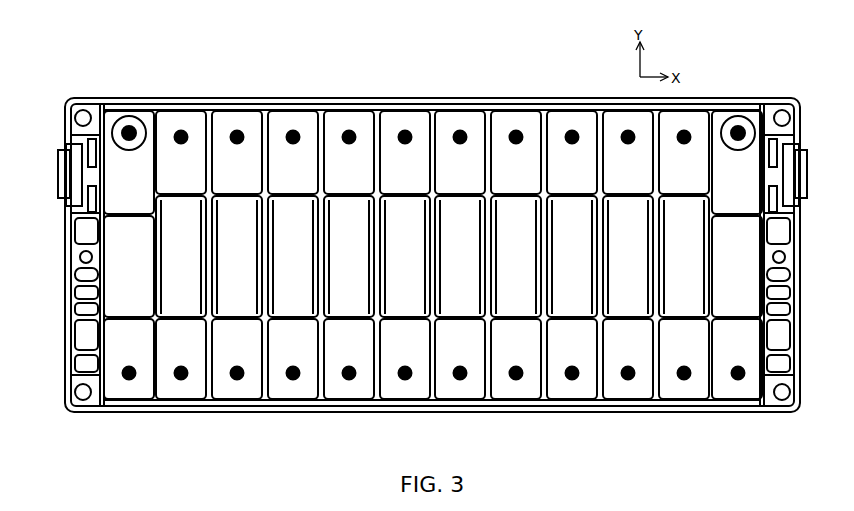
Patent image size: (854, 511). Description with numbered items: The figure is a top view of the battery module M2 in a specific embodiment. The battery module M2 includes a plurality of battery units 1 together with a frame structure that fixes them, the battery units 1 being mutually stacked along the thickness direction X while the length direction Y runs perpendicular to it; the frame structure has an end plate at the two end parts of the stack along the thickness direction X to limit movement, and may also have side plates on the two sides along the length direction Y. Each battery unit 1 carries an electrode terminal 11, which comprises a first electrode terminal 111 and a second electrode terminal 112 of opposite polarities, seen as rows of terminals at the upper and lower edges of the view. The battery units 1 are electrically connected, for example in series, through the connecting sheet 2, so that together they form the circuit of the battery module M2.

The battery unit 1 is at (742, 297).
The connecting sheet 2 is at (745, 395).
The electrode terminal 11 is at (739, 132).
The first electrode terminal 111 is at (406, 136).
The second electrode terminal 112 is at (405, 376).
The battery module M2 is at (96, 72).